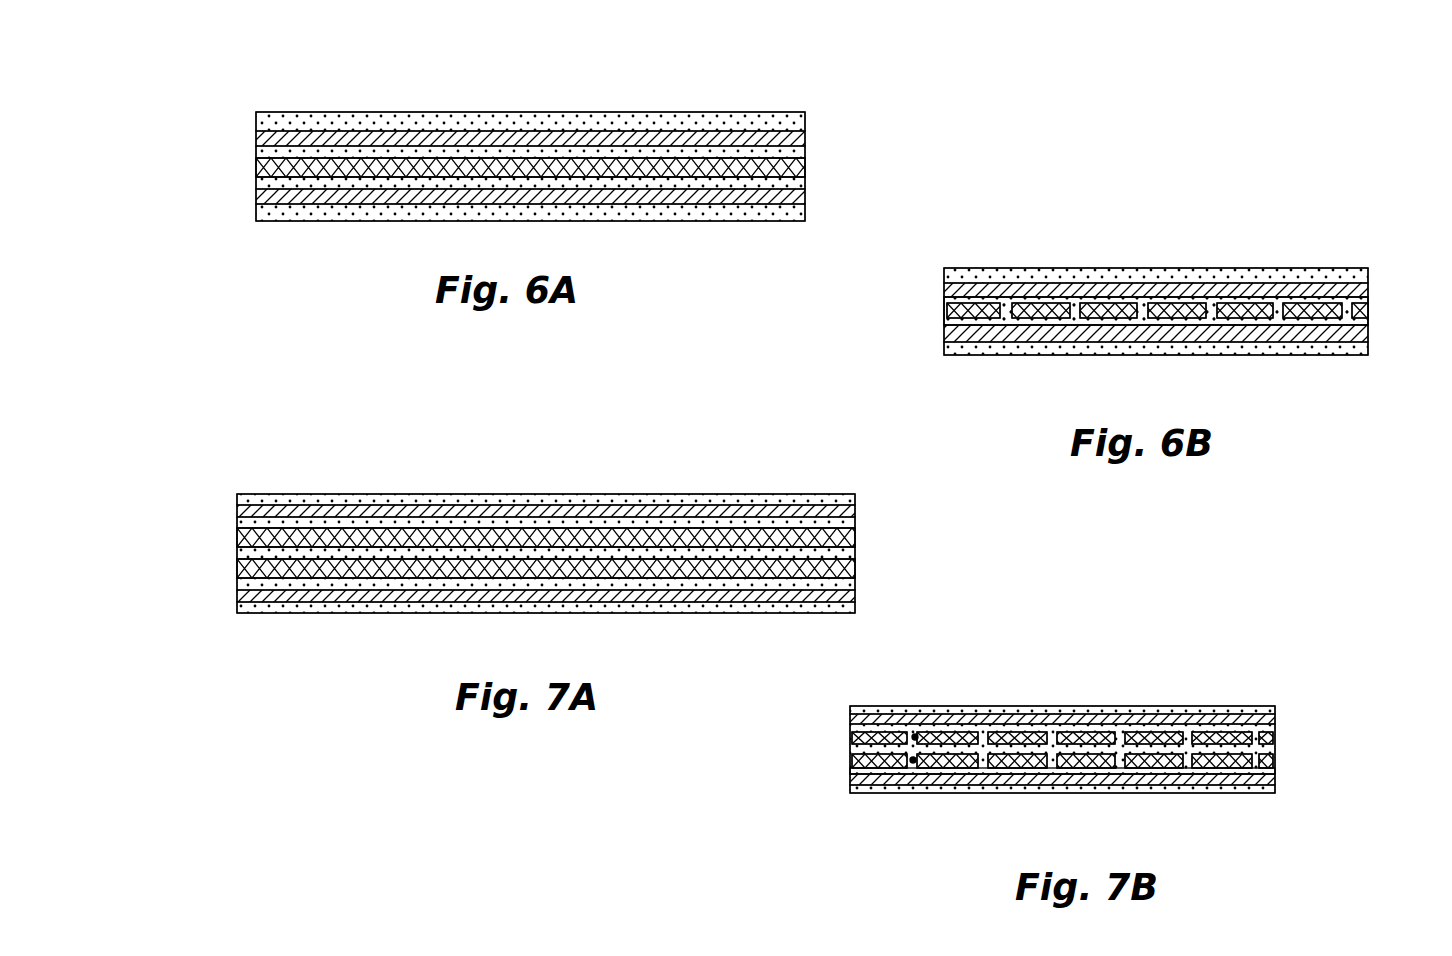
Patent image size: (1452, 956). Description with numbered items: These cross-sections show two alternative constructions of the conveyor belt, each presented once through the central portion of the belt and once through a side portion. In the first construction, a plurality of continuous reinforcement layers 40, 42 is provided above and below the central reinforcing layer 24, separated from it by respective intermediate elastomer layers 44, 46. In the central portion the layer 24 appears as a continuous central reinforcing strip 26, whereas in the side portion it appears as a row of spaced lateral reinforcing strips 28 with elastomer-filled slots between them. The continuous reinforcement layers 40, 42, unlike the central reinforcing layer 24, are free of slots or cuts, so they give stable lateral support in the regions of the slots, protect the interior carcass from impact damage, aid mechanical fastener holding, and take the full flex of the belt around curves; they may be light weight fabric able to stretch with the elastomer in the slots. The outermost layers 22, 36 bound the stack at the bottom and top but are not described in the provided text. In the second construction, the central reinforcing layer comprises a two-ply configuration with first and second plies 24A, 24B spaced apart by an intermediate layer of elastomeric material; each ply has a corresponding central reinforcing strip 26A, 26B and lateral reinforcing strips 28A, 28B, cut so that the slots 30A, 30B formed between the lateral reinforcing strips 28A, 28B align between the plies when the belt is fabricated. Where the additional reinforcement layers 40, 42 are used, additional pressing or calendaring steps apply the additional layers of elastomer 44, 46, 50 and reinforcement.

In FIG. 6A, the outer layer 22 is at (783, 222).
In FIG. 6B, the outer layer 22 is at (1275, 356).
In FIG. 7A, the outer layer 22 is at (605, 614).
In FIG. 7B, the outer layer 22 is at (1188, 794).
In FIG. 6A, the central reinforcing layer 24 is at (665, 160).
In FIG. 6A, the central reinforcing strip 26 is at (805, 165).
In FIG. 6B, the lateral reinforcing strip 28 is at (947, 310).
In FIG. 6A, the outer layer 36 is at (805, 118).
In FIG. 6B, the outer layer 36 is at (1113, 270).
In FIG. 7A, the outer layer 36 is at (685, 495).
In FIG. 7B, the outer layer 36 is at (1117, 707).
In FIG. 6A, the continuous reinforcement layer 40 is at (805, 140).
In FIG. 6B, the continuous reinforcement layer 40 is at (1010, 290).
In FIG. 7A, the continuous reinforcement layer 40 is at (790, 497).
In FIG. 7B, the continuous reinforcement layer 40 is at (1176, 720).
In FIG. 6A, the continuous reinforcement layer 42 is at (805, 195).
In FIG. 6B, the continuous reinforcement layer 42 is at (1030, 337).
In FIG. 7A, the continuous reinforcement layer 42 is at (855, 595).
In FIG. 7B, the continuous reinforcement layer 42 is at (1278, 785).
In FIG. 6A, the intermediate elastomer layer 44 is at (805, 152).
In FIG. 6B, the intermediate elastomer layer 44 is at (983, 300).
In FIG. 7A, the intermediate elastomer layer 44 is at (635, 518).
In FIG. 7B, the intermediate elastomer layer 44 is at (1222, 728).
In FIG. 6A, the intermediate elastomer layer 46 is at (805, 185).
In FIG. 6B, the intermediate elastomer layer 46 is at (960, 326).
In FIG. 7A, the intermediate elastomer layer 46 is at (683, 582).
In FIG. 7B, the intermediate elastomer layer 46 is at (1278, 773).
In FIG. 7A, the elastomer layer 50 is at (237, 549).
In FIG. 7B, the elastomer layer 50 is at (850, 745).
In FIG. 7A, the first ply 24A is at (855, 538).
In FIG. 7A, the central reinforcing strip 26A is at (633, 518).
In FIG. 7A, the second ply 24B is at (855, 570).
In FIG. 7A, the central reinforcing strip 26B is at (633, 551).
In FIG. 7B, the lateral reinforcing strip 28A is at (1278, 740).
In FIG. 7B, the lateral reinforcing strip 28B is at (1278, 760).
In FIG. 7B, the slot 30A is at (915, 733).
In FIG. 7B, the slot 30B is at (913, 764).